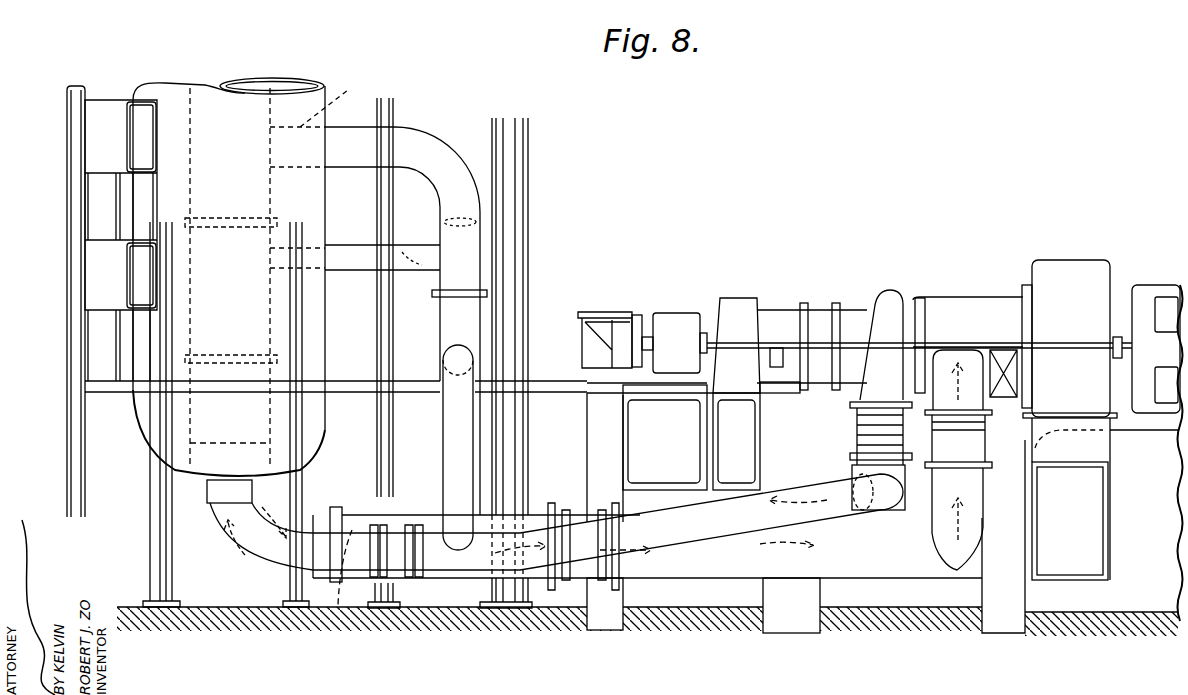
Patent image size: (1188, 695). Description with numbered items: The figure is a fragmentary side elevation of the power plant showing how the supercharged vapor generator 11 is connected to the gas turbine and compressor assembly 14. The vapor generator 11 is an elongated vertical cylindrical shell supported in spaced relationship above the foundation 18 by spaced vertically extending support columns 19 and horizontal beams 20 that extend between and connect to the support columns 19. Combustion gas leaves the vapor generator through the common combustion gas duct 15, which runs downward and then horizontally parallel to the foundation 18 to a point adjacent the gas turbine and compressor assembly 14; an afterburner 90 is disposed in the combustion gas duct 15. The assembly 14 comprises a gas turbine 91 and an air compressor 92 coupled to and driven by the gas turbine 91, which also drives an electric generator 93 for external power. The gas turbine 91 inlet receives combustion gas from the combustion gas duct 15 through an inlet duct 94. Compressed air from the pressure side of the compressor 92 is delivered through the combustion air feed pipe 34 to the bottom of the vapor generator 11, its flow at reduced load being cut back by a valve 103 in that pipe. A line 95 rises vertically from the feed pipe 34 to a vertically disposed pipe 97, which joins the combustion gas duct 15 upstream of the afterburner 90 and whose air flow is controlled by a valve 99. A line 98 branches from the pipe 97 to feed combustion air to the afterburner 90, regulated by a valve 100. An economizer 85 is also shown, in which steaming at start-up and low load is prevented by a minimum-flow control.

The supercharged vapor generator 11 is at (51, 214).
The gas turbine and compressor assembly 14 is at (890, 261).
The combustion gas duct 15 is at (290, 195).
The foundation 18 is at (256, 609).
The support column 19 is at (528, 172).
The horizontal beam 20 is at (113, 394).
The combustion air feed pipe 34 is at (240, 547).
The economizer 85 is at (1126, 600).
The afterburner 90 is at (300, 332).
The gas turbine 91 is at (1032, 270).
The air compressor 92 is at (872, 302).
The electric generator 93 is at (1150, 288).
The inlet duct 94 is at (977, 487).
The line 95 is at (445, 460).
The pipe 97 is at (350, 127).
The line 98 is at (343, 245).
The valve 99 is at (478, 222).
The valve 100 is at (420, 291).
The valve 103 is at (340, 607).